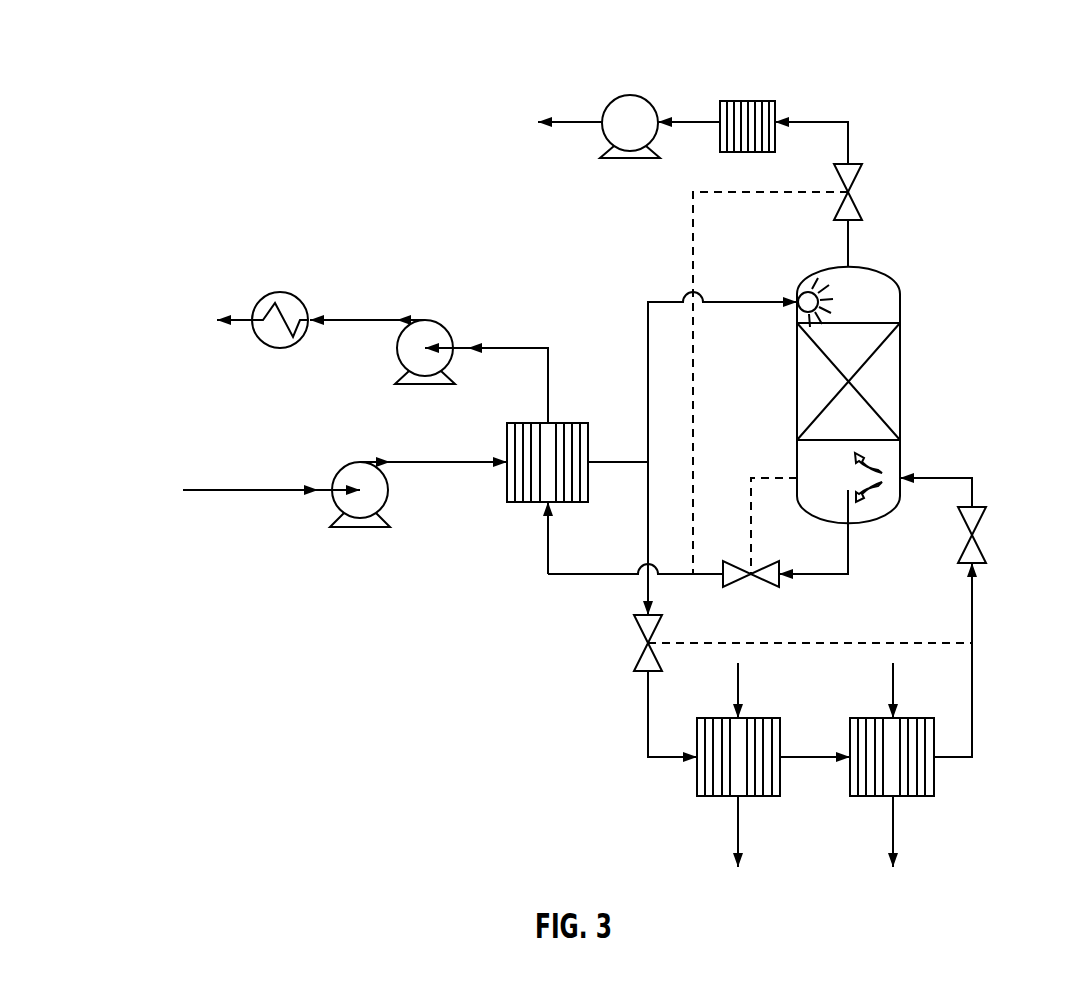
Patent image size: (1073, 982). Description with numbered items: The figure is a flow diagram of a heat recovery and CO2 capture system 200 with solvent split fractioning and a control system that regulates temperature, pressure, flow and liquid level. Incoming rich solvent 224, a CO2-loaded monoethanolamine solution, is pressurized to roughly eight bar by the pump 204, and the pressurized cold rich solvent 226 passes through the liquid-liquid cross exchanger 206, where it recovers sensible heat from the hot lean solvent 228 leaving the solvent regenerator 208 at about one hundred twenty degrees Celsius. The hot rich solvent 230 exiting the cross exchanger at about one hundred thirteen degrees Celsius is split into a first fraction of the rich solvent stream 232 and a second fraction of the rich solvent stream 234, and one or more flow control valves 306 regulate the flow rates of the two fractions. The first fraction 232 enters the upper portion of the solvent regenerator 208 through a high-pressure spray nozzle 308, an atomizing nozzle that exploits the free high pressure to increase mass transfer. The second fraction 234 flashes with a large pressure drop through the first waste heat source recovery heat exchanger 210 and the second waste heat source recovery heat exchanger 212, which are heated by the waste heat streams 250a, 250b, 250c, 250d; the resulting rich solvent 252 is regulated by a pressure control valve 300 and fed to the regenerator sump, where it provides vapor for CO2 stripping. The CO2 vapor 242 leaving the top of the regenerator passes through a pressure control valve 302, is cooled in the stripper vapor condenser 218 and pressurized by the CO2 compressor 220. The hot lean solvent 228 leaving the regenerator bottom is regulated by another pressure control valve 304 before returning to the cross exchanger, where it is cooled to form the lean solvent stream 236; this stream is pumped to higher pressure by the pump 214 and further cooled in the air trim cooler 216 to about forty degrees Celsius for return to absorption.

The heat recovery and CO2 capture system 200 is at (280, 62).
The pump 204 is at (360, 512).
The liquid-liquid cross exchanger 206 is at (533, 493).
The solvent regenerator 208 is at (892, 375).
The first waste heat source recovery heat exchanger 210 is at (755, 787).
The second waste heat source recovery heat exchanger 212 is at (878, 785).
The pump 214 is at (430, 328).
The air trim cooler 216 is at (275, 337).
The stripper vapor condenser 218 is at (750, 100).
The CO2 compressor 220 is at (627, 108).
The rich solvent 224 is at (253, 490).
The pressurized cold rich solvent 226 is at (457, 465).
The hot lean solvent 228 is at (583, 578).
The hot rich solvent 230 is at (628, 465).
The first fraction of the rich solvent stream 232 is at (648, 372).
The second fraction of the rich solvent stream 234 is at (647, 537).
The lean solvent stream 236 is at (546, 385).
The CO2 vapor 242 is at (822, 120).
The waste heat stream 250a is at (740, 683).
The waste heat stream 250b is at (893, 687).
The waste heat stream 250c is at (737, 833).
The waste heat stream 250d is at (897, 833).
The rich solvent 252 is at (973, 630).
The pressure control valve 300 is at (977, 507).
The pressure control valve 302 is at (850, 177).
The pressure control valve 304 is at (730, 563).
The flow control valve 306 is at (655, 630).
The high-pressure spray nozzle 308 is at (827, 293).